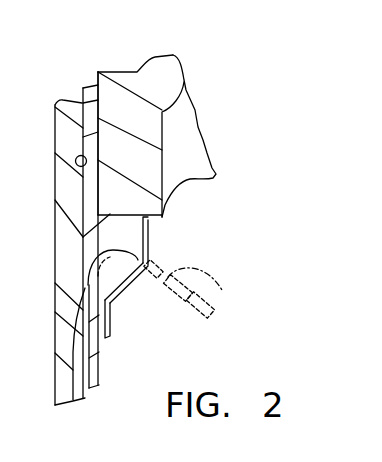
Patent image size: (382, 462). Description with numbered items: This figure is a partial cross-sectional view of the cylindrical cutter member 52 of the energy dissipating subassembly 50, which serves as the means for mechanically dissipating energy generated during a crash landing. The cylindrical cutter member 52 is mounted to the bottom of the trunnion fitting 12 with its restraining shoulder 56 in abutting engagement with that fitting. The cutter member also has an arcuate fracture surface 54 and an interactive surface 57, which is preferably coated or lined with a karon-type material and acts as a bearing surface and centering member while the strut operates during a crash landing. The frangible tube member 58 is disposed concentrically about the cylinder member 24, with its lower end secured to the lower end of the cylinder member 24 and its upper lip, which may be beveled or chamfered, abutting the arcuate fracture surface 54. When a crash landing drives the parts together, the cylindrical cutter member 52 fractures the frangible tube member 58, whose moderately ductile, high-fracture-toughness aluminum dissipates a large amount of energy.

The trunnion fitting 12 is at (160, 83).
The cylinder member 24 is at (66, 249).
The energy dissipating subassembly 50 is at (170, 335).
The cylindrical cutter member 52 is at (140, 238).
The arcuate fracture surface 54 is at (118, 291).
The restraining shoulder 56 is at (163, 211).
The interactive surface 57 is at (88, 167).
The frangible tube member 58 is at (103, 363).